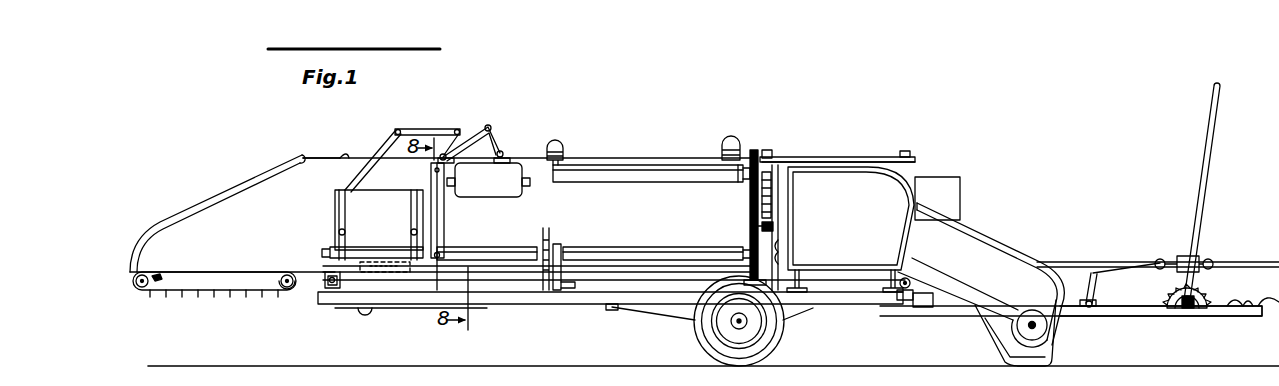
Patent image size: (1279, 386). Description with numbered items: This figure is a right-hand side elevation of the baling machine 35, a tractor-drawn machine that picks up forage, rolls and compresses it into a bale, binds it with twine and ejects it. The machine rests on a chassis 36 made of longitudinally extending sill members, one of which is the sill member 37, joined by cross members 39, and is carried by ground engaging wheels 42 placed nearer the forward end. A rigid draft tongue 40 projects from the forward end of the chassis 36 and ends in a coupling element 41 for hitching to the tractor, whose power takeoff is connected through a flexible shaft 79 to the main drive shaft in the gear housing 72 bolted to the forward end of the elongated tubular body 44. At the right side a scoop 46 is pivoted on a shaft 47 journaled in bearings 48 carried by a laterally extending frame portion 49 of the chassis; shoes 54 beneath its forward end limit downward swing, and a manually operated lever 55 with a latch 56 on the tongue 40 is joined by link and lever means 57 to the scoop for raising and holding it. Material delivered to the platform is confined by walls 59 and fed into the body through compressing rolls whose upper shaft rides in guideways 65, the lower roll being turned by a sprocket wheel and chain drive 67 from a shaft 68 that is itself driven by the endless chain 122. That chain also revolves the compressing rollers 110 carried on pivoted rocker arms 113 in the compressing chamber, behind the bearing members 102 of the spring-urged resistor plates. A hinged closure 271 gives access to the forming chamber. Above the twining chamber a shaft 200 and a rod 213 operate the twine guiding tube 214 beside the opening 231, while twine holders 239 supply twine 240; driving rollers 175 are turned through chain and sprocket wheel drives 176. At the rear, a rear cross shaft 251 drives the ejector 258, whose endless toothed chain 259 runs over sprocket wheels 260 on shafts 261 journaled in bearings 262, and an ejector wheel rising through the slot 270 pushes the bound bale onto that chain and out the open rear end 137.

The open rear end 137 is at (240, 195).
The tubular body 44 is at (312, 156).
The endless toothed chain 259 is at (218, 292).
The shafts 261 is at (143, 286).
The sprocket wheels 260 is at (282, 289).
The bearings 262 is at (161, 272).
The opening 231 is at (388, 192).
The twine guiding tube 214 is at (369, 164).
The rod 213 is at (422, 129).
The shaft 200 is at (446, 154).
The twine 240 is at (350, 160).
The twine holders 239 is at (524, 195).
The driving rollers 175 is at (489, 250).
The chain and sprocket wheel drives 176 is at (547, 246).
The rocker arms 113 is at (566, 156).
The compressing rollers 110 is at (690, 183).
The endless chain 122 is at (750, 200).
The bearing members 102 is at (768, 151).
The guideways 65 is at (783, 198).
The sprocket wheel and chain drive 67 is at (783, 224).
The shaft 68 is at (784, 254).
The hinged closure 271 is at (838, 157).
The walls 59 is at (866, 233).
The cross members 39 is at (860, 282).
The baling machine 35 is at (877, 150).
The gear housing 72 is at (963, 186).
The sill member 37 is at (838, 304).
The chassis 36 is at (614, 310).
The ground engaging wheels 42 is at (696, 337).
The slot 270 is at (350, 304).
The ejector 258 is at (388, 290).
The rear cross shaft 251 is at (366, 316).
The bearings 48 is at (903, 301).
The frame portion 49 is at (930, 308).
The shaft 47 is at (903, 290).
The scoop 46 is at (979, 308).
The shoes 54 is at (1043, 364).
The draft tongue 40 is at (1116, 314).
The flexible shaft 79 is at (1086, 261).
The link and lever means 57 is at (1098, 292).
The manually operated lever 55 is at (1198, 222).
The latch 56 is at (1200, 302).
The coupling element 41 is at (1266, 307).